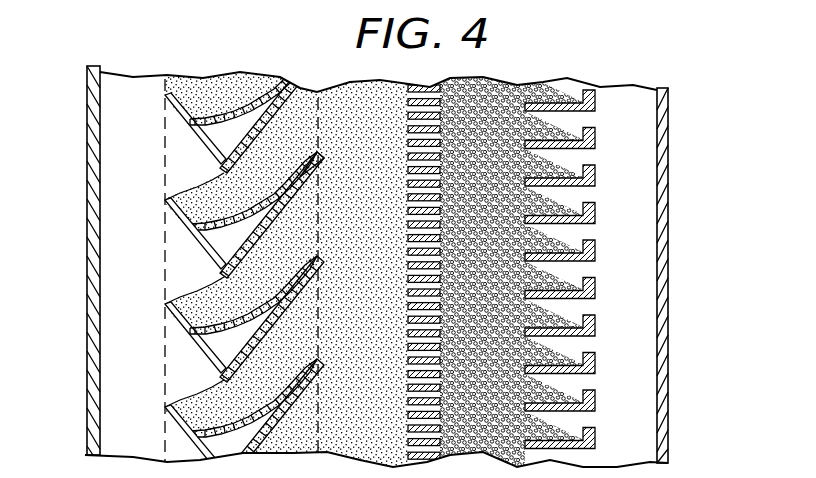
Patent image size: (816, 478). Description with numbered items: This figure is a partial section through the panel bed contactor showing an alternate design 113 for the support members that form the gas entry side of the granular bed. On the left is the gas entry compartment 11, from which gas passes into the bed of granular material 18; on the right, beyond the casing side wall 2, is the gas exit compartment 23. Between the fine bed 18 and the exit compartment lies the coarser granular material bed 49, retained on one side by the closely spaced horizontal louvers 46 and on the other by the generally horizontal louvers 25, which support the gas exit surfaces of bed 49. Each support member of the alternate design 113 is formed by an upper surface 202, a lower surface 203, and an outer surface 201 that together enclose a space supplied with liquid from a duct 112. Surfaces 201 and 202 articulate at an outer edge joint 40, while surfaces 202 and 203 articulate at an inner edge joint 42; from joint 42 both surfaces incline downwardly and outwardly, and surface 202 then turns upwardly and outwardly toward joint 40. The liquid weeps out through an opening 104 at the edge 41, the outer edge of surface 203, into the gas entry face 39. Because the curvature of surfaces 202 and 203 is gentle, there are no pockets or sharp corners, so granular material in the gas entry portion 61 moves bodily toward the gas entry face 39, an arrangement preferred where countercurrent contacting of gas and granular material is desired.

The side wall 2 is at (668, 358).
The gas entry compartment 11 is at (123, 183).
The bed of granular material 18 is at (382, 212).
The gas exit compartment 23 is at (640, 182).
The louvers 25 is at (597, 252).
The gas entry face 39 is at (192, 387).
The outer edge joint 40 is at (165, 197).
The edge 41 is at (222, 177).
The inner edge joint 42 is at (318, 149).
The louvers 46 is at (440, 275).
The granular material bed 49 is at (500, 213).
The gas entry portion 61 is at (270, 391).
The opening 104 is at (227, 261).
The duct 112 is at (160, 432).
The alternate design 113 is at (193, 142).
The outer surface 201 is at (193, 345).
The upper surface 202 is at (185, 298).
The lower surface 203 is at (318, 282).